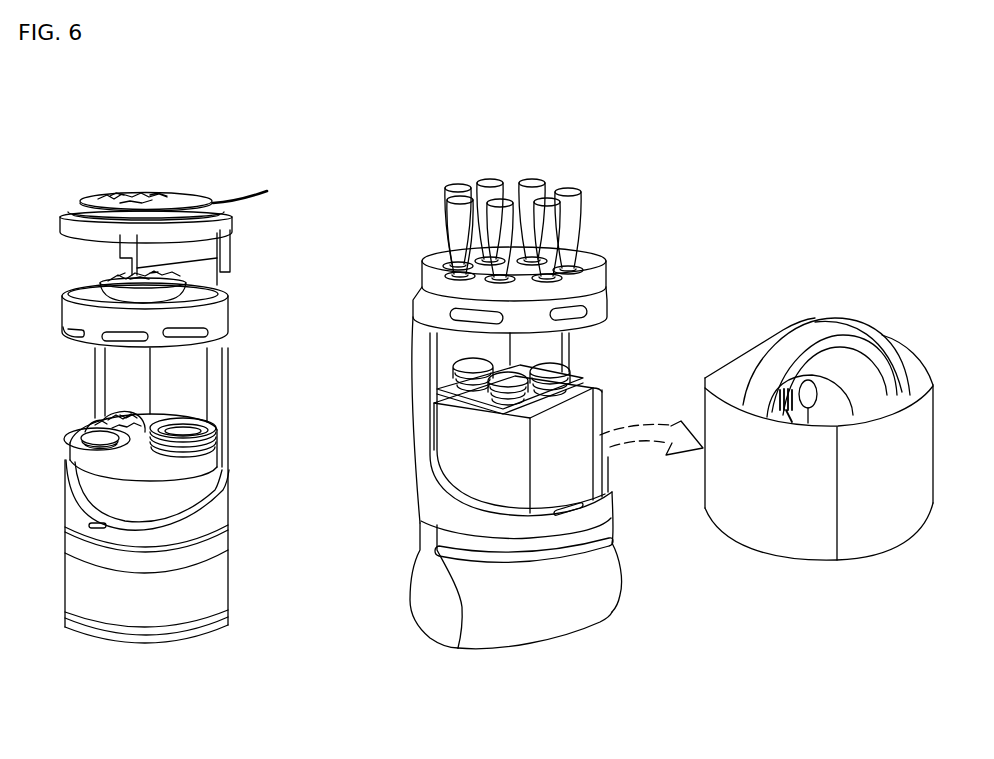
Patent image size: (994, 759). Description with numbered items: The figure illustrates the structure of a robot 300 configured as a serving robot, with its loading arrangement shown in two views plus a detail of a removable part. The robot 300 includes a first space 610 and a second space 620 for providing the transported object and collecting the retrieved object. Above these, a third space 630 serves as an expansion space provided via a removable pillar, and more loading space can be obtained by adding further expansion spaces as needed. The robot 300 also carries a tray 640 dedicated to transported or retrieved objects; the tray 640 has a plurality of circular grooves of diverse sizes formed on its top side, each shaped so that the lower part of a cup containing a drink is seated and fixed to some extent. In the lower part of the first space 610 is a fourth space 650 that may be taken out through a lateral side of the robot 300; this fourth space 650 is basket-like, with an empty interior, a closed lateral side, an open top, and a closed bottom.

The robot 300 is at (73, 101).
The first space 610 is at (212, 462).
The second space 620 is at (228, 316).
The third space 630 is at (222, 224).
The tray 640 is at (430, 275).
The fourth space 650 is at (455, 448).